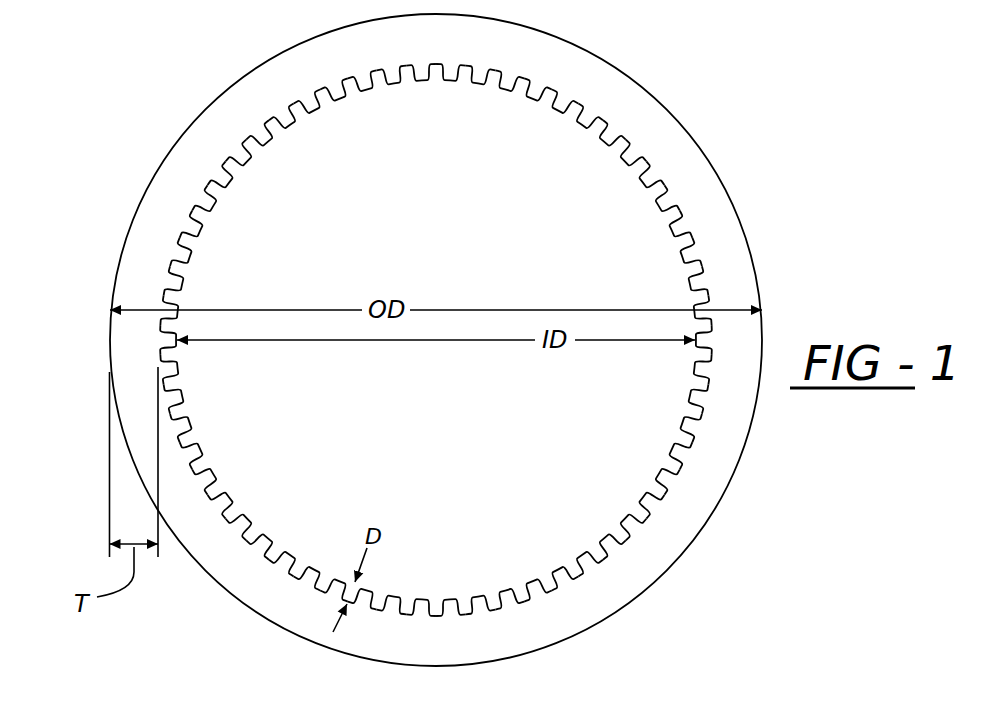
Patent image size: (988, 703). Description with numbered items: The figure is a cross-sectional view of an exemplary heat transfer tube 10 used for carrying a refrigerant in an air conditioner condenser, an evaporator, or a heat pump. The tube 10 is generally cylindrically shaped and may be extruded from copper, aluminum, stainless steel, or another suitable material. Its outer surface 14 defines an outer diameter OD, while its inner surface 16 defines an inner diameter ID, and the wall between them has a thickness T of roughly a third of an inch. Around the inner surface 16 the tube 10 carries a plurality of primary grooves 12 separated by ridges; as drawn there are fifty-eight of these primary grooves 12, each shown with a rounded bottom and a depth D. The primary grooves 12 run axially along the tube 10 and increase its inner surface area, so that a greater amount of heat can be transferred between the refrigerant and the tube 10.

The tube 10 is at (103, 116).
The primary grooves 12 is at (575, 577).
The outer surface 14 is at (732, 475).
The inner surface 16 is at (433, 377).